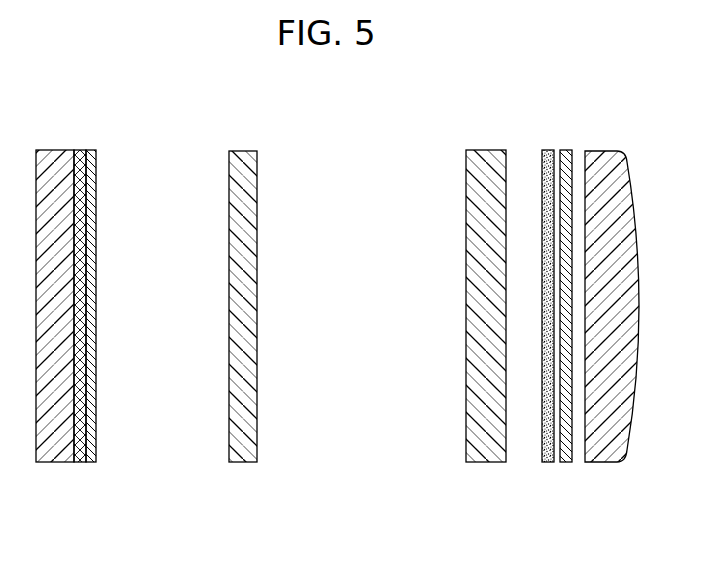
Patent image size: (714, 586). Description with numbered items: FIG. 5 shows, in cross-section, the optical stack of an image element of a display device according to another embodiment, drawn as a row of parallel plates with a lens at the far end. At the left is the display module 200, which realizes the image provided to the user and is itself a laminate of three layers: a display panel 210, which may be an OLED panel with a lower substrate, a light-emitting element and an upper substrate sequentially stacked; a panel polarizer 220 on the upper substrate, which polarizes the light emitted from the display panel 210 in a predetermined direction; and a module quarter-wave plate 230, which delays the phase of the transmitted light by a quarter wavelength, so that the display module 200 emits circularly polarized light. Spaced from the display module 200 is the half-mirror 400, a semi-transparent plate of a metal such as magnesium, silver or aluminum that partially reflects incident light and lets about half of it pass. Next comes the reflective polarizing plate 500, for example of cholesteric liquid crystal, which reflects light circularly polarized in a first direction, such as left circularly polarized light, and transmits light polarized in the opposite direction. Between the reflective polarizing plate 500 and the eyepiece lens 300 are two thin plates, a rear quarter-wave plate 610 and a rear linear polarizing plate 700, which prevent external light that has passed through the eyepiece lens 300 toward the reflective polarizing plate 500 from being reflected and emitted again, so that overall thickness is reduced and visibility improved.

The display module 200 is at (85, 360).
The display panel 210 is at (41, 463).
The panel polarizer 220 is at (78, 463).
The module quarter-wave plate 230 is at (111, 334).
The half-mirror 400 is at (243, 463).
The reflective polarizing plate 500 is at (483, 463).
The rear quarter-wave plate 610 is at (548, 149).
The rear linear polarizing plate 700 is at (565, 463).
The eyepiece lens 300 is at (598, 463).